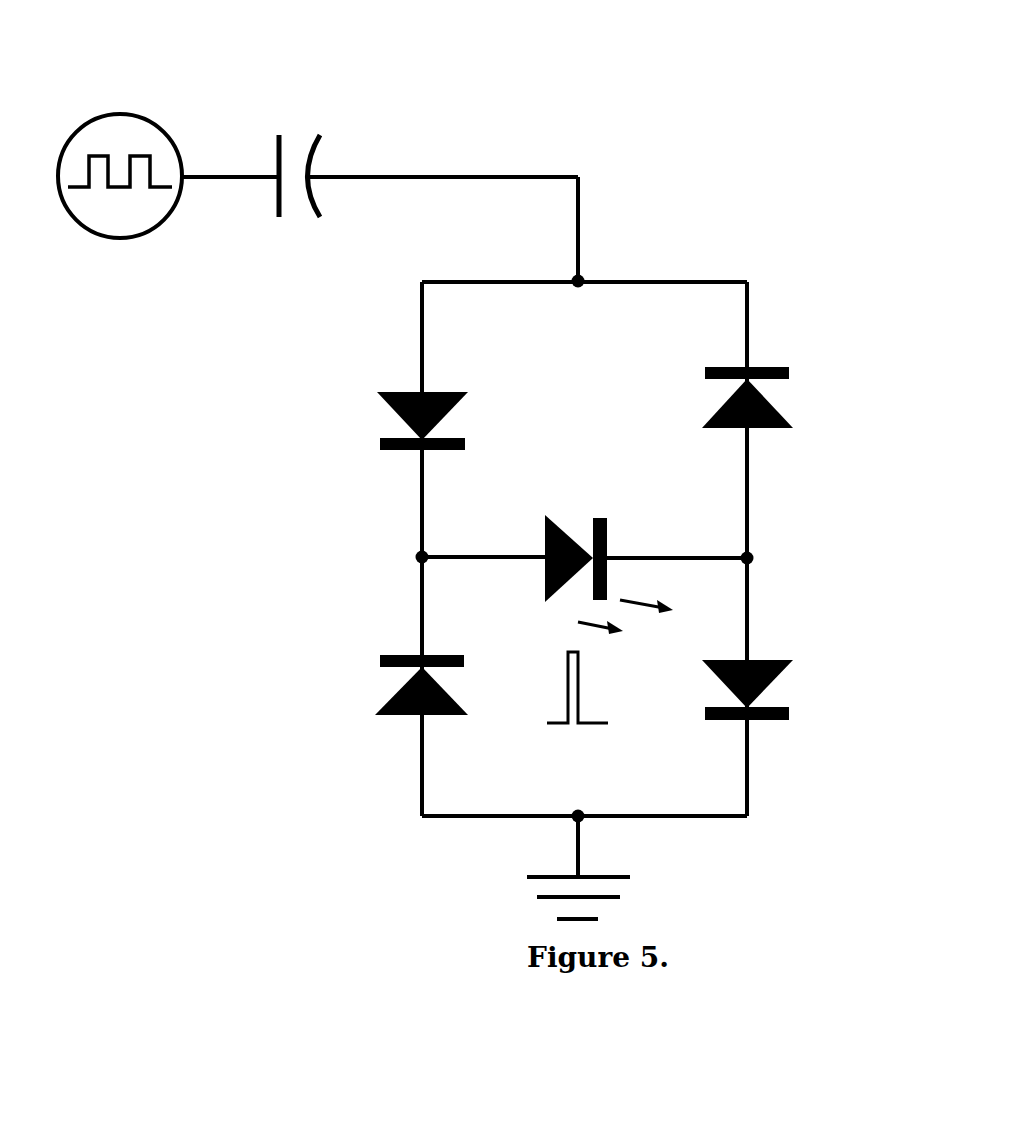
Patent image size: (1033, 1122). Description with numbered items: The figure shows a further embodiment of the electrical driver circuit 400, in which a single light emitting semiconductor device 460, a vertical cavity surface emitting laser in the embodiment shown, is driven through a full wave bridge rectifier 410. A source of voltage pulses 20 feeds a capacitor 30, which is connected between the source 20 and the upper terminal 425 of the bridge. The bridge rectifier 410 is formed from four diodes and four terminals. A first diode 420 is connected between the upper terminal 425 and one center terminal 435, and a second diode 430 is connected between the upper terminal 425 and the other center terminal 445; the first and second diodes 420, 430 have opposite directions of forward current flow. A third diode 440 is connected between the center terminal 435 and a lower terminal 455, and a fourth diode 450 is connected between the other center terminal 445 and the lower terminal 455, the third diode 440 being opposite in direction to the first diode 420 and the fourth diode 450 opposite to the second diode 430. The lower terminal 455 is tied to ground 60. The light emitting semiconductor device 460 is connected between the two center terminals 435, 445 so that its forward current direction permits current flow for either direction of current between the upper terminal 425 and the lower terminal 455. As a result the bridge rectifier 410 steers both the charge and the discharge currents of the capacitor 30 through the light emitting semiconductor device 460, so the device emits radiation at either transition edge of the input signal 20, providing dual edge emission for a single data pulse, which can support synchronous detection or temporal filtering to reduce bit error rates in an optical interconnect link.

The source of voltage pulses 20 is at (123, 95).
The capacitor 30 is at (308, 130).
The ground 60 is at (640, 920).
The driver circuit 400 is at (410, 549).
The full wave bridge rectifier 410 is at (777, 280).
The first diode 420 is at (392, 377).
The upper terminal 425 is at (591, 263).
The second diode 430 is at (790, 393).
The center terminal 435 is at (410, 557).
The third diode 440 is at (373, 640).
The center terminal 445 is at (760, 560).
The fourth diode 450 is at (773, 643).
The lower terminal 455 is at (607, 825).
The light emitting semiconductor device 460 is at (557, 478).